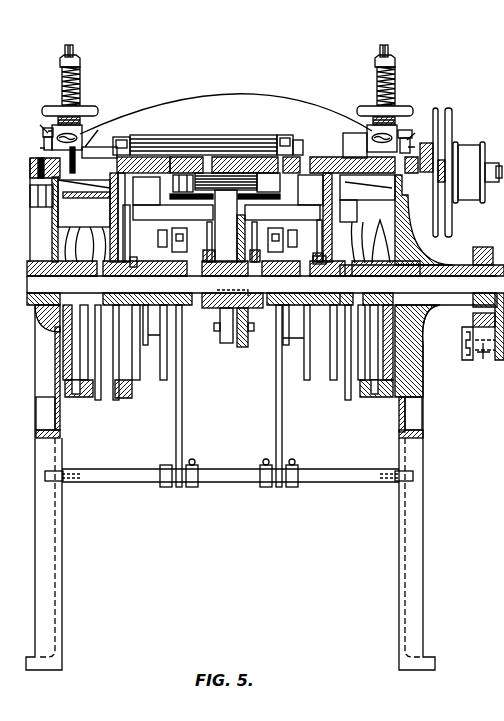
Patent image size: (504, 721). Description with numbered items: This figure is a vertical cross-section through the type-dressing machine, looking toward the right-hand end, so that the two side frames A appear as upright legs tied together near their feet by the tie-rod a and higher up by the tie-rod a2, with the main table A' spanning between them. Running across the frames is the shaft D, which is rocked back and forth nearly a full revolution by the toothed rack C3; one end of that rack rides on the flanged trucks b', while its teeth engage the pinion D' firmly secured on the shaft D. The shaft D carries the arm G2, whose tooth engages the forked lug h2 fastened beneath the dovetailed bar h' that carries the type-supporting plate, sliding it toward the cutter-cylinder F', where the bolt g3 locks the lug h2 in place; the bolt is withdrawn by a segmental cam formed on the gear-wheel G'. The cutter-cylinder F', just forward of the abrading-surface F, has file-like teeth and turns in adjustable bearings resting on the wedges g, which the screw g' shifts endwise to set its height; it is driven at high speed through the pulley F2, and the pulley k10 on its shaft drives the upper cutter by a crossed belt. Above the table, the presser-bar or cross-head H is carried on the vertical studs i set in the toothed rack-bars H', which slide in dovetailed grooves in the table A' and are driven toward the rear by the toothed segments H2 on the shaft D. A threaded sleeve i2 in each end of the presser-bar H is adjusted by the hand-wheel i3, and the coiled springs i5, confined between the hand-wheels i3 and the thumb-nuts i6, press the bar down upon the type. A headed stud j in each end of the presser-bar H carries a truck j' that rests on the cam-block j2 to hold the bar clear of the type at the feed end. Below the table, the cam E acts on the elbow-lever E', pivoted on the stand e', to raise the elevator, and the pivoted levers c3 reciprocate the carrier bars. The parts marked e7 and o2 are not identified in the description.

The side frames A is at (233, 487).
The shaft D is at (251, 285).
The tie-rod a is at (218, 475).
The pivoted levers c3 is at (176, 406).
The cam E is at (232, 327).
The elbow-lever E' is at (233, 336).
The tie-rod a2 is at (106, 380).
The gear-wheel G' is at (225, 352).
The connecting rod e7 is at (158, 341).
The toothed segments H2 is at (78, 397).
The toothed rack C3 is at (465, 327).
The flanged trucks b' is at (485, 355).
The vertical studs i is at (74, 53).
The thumb-nuts i6 is at (79, 61).
The coiled springs i5 is at (80, 80).
The hand-wheel i3 is at (87, 108).
The threaded sleeve i2 is at (396, 119).
The toothed rack-bars H' is at (224, 149).
The main table A' is at (95, 136).
The headed stud j is at (217, 140).
The truck j' is at (223, 128).
The cam-block j2 is at (225, 147).
The stand e' is at (212, 201).
The wedges g is at (227, 234).
The abrading-surface F is at (203, 149).
The end block o2 is at (120, 150).
The bolt g3 is at (147, 157).
The dovetailed bar h' is at (296, 147).
The cutter-cylinder F' is at (226, 154).
The presser-bar H is at (225, 152).
The forked lug h2 is at (228, 197).
The screw g' is at (227, 220).
The arm G2 is at (207, 253).
The pulley k10 is at (449, 120).
The pulley F2 is at (478, 169).
The pinion D' is at (483, 247).